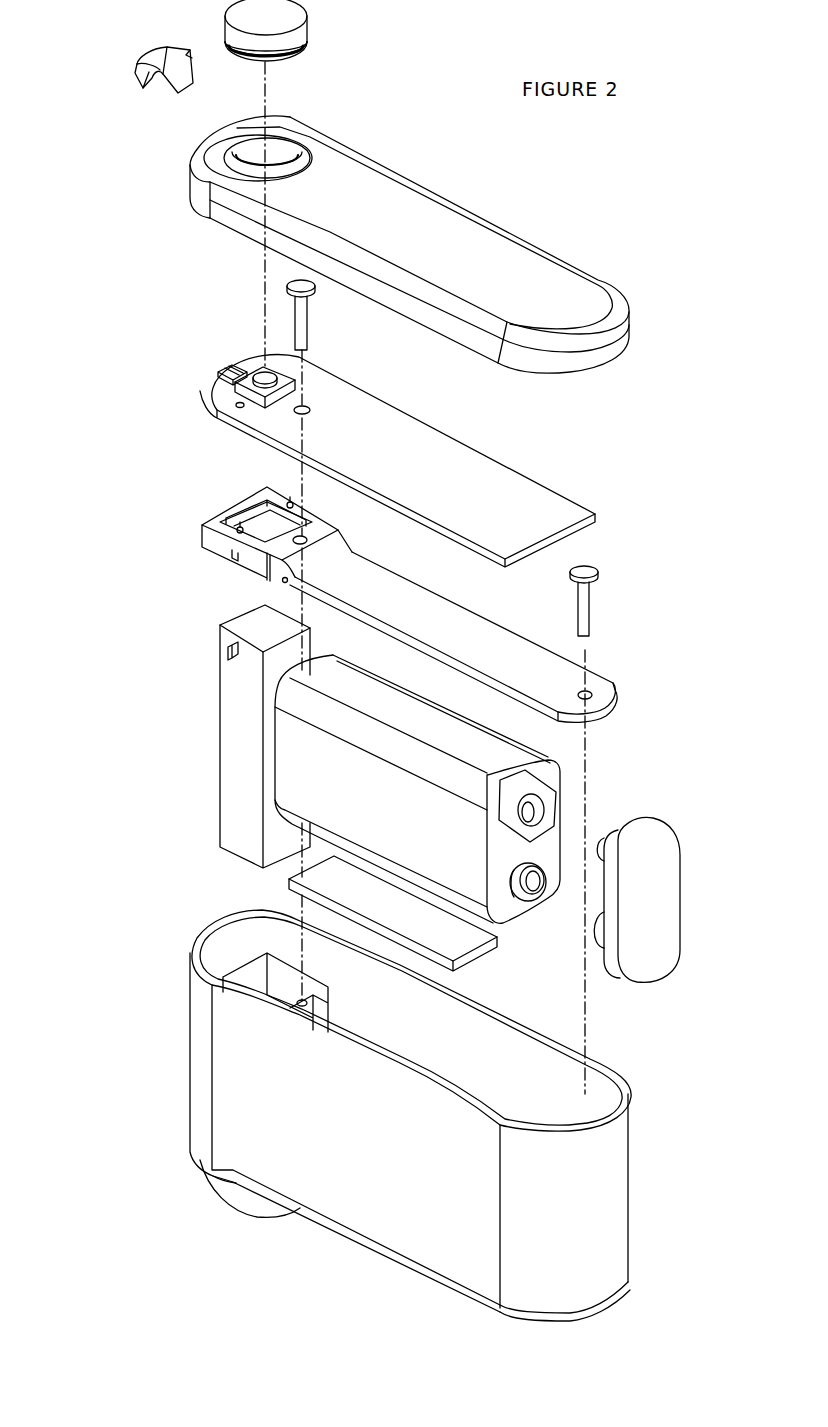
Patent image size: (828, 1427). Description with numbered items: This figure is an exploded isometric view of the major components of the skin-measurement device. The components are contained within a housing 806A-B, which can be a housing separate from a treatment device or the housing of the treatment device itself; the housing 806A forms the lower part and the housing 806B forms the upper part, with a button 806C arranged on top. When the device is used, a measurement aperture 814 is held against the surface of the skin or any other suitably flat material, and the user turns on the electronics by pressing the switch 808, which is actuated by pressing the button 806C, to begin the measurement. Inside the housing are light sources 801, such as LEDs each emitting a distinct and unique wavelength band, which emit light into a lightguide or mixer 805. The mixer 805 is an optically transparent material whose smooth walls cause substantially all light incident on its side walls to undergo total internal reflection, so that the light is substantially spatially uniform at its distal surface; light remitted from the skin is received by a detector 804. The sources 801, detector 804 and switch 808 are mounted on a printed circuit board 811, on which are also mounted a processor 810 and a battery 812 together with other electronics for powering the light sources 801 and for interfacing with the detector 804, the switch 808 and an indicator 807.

The button 806C is at (308, 30).
The indicator 807 is at (120, 70).
The housing 806B is at (448, 244).
The switch 808 is at (252, 344).
The processor 810 is at (397, 461).
The light sources 801 is at (247, 523).
The detector 804 is at (277, 559).
The printed circuit board 811 is at (453, 637).
The mixer 805 is at (235, 736).
The battery 812 is at (417, 789).
The housing 806A is at (427, 1115).
The measurement aperture 814 is at (221, 1188).